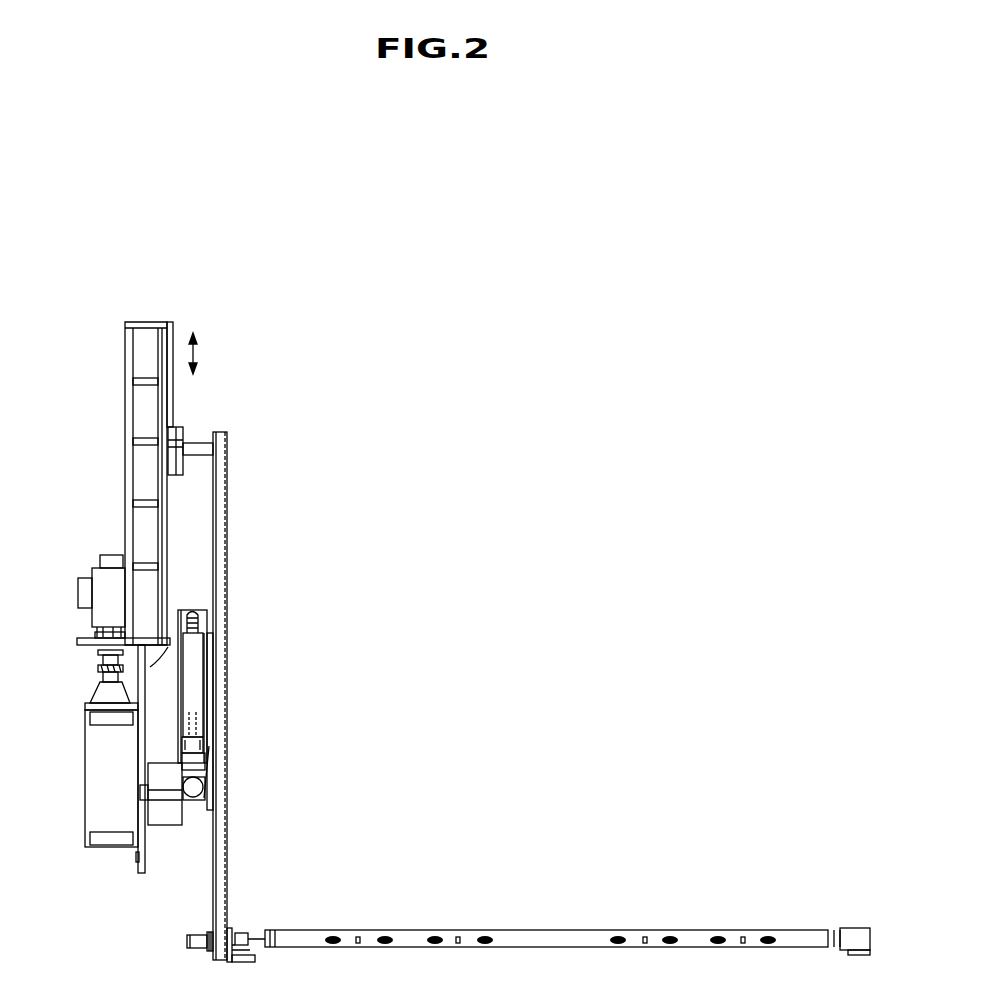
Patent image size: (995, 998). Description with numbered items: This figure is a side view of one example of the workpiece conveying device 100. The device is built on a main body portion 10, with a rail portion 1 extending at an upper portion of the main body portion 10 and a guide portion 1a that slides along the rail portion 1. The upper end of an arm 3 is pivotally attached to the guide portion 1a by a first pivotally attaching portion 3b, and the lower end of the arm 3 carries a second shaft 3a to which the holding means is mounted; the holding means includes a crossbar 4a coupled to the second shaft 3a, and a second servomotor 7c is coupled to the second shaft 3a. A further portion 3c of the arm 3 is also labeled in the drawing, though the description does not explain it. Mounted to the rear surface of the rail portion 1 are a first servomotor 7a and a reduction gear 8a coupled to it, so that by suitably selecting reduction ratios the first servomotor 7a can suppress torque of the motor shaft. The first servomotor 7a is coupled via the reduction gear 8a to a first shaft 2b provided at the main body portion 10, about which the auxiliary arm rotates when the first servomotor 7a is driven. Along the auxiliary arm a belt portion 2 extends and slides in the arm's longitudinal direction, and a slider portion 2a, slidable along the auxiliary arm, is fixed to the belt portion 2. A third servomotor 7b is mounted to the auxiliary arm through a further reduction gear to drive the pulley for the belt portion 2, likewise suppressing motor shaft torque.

The workpiece conveying device 100 is at (330, 337).
The rail portion 1 is at (173, 333).
The guide portion 1a is at (185, 432).
The arm 3 is at (222, 522).
The second shaft 3a is at (230, 928).
The first pivotally attaching portion 3b is at (200, 445).
The guide rail 3c is at (228, 645).
The belt portion 2 is at (222, 743).
The slider portion 2a is at (210, 670).
The first shaft 2b is at (163, 803).
The first servomotor 7a is at (82, 592).
The third servomotor 7b is at (204, 742).
The second servomotor 7c is at (187, 941).
The reduction gear 8a is at (93, 777).
The main body portion 10 is at (140, 865).
The crossbar 4a is at (517, 938).